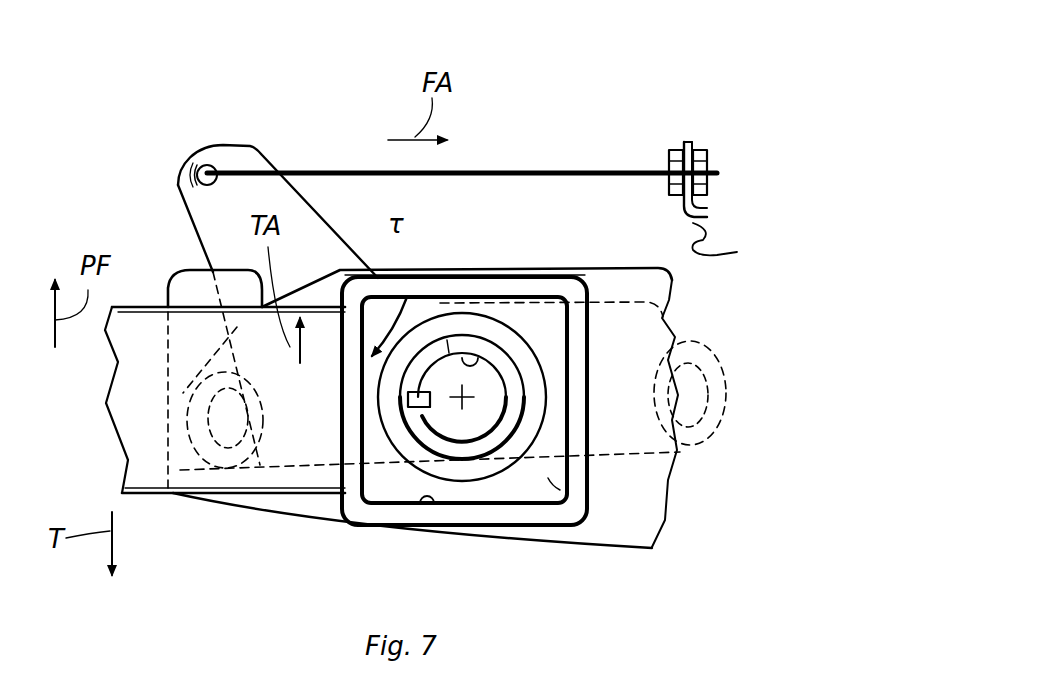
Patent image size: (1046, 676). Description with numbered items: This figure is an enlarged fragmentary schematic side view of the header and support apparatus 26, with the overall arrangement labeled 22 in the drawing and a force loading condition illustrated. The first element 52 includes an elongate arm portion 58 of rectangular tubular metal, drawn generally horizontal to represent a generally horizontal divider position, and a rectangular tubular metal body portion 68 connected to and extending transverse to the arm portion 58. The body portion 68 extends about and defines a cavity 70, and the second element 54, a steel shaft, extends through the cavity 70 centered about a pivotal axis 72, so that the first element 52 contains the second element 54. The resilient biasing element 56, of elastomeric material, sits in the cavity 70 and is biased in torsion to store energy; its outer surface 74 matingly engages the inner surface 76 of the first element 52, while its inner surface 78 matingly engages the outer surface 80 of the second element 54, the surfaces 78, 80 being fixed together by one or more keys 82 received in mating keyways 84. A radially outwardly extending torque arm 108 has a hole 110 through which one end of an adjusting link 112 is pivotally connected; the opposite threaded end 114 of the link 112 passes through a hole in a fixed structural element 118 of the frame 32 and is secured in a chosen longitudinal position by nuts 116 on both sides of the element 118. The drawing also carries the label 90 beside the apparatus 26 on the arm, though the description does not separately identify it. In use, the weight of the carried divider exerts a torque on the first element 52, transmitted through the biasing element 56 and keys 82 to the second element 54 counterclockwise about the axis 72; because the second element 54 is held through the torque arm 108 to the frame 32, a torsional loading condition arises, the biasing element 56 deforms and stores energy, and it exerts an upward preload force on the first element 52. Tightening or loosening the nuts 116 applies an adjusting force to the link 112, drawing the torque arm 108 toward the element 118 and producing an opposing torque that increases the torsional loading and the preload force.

The clamp assembly 22 is at (780, 92).
The support apparatus 26 is at (452, 263).
The lever arm 90 is at (262, 150).
The frame 32 is at (759, 250).
The fixed structural element 118 is at (714, 239).
The first element 52 is at (281, 494).
The second element 54 is at (482, 447).
The resilient biasing element 56 is at (585, 503).
The arm portion 58 is at (138, 305).
The body portion 68 is at (573, 543).
The cavity 70 is at (560, 482).
The pivotal axis 72 is at (477, 392).
The outer surface 74 is at (388, 507).
The inner surface 76 is at (420, 503).
The inner surface 78 is at (493, 360).
The outer surface 80 is at (449, 353).
The keys 82 is at (408, 396).
The keyways 84 is at (415, 408).
The torque arm 108 is at (217, 145).
The hole 110 is at (200, 167).
The adjusting link 112 is at (550, 168).
The threaded end 114 is at (712, 167).
The nuts 116 is at (703, 150).